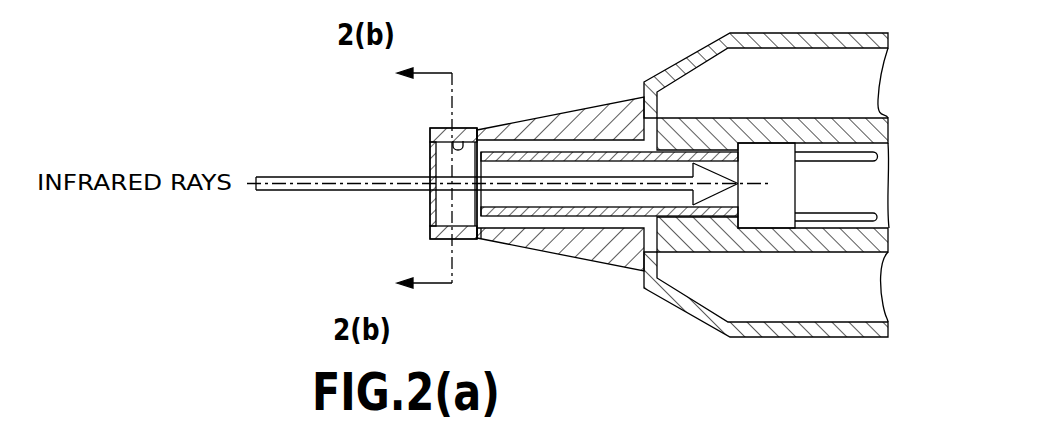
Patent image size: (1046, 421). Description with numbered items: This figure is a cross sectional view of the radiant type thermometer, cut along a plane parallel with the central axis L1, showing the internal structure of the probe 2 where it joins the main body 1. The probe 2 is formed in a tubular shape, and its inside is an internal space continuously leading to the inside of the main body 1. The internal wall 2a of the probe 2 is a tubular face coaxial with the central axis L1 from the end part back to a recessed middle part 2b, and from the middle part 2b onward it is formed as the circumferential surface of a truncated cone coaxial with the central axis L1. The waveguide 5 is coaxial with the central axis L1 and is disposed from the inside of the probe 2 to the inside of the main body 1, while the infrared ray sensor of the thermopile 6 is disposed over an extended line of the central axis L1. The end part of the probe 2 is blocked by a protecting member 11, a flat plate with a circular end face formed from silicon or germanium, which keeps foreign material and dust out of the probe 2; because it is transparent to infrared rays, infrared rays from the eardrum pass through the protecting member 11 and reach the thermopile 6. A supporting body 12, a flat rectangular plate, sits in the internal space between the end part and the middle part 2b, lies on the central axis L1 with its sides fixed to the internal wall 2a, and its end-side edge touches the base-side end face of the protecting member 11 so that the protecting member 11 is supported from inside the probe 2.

The main body 1 is at (737, 320).
The probe 2 is at (482, 120).
The internal wall 2a is at (458, 140).
The middle part 2b is at (475, 240).
The waveguide 5 is at (600, 218).
The thermopile 6 is at (797, 183).
The protecting member 11 is at (424, 156).
The supporting body 12 is at (432, 212).
The central axis L1 is at (347, 191).